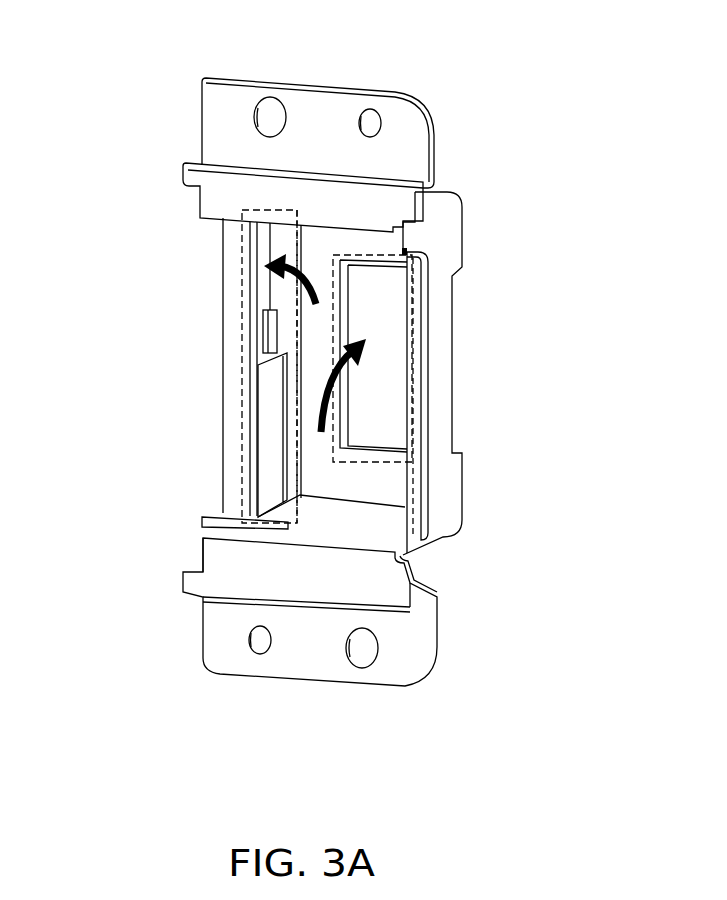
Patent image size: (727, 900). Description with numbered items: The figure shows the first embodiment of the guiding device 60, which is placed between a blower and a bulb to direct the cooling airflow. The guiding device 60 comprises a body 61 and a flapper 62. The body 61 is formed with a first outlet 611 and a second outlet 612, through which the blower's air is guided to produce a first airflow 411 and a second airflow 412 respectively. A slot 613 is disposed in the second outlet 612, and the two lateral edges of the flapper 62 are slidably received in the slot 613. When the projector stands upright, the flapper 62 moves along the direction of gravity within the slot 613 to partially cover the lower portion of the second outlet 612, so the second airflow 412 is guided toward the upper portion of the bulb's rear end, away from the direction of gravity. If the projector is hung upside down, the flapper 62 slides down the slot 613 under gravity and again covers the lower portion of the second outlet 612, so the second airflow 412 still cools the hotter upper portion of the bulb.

The guiding device 60 is at (322, 54).
The body 61 is at (228, 100).
The first outlet 611 is at (413, 330).
The second outlet 612 is at (242, 282).
The slot 613 is at (273, 333).
The flapper 62 is at (273, 455).
The first airflow 411 is at (333, 410).
The second airflow 412 is at (266, 265).